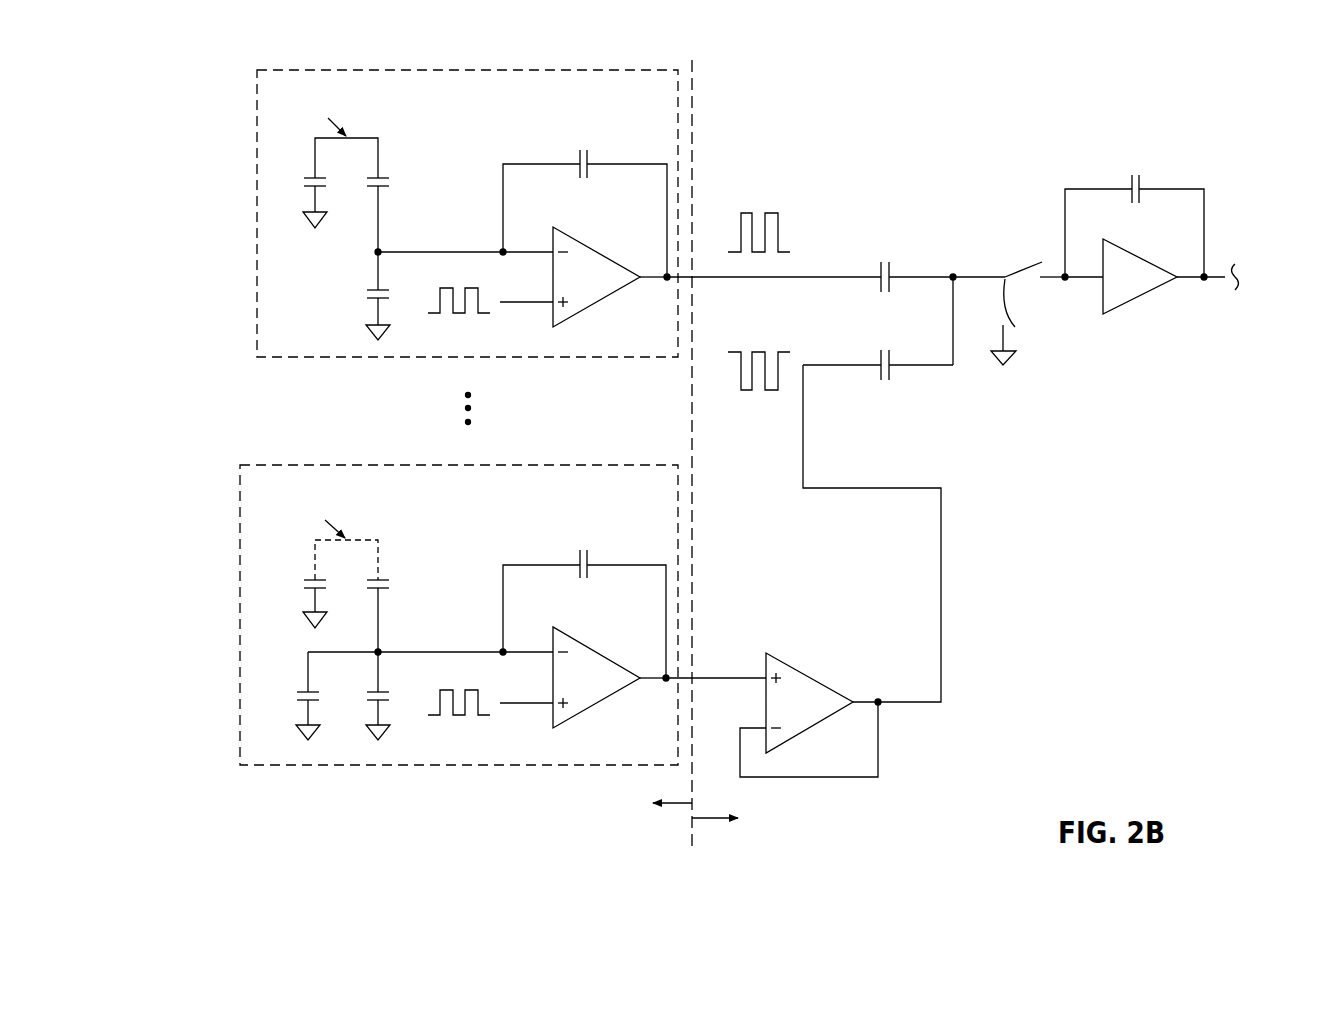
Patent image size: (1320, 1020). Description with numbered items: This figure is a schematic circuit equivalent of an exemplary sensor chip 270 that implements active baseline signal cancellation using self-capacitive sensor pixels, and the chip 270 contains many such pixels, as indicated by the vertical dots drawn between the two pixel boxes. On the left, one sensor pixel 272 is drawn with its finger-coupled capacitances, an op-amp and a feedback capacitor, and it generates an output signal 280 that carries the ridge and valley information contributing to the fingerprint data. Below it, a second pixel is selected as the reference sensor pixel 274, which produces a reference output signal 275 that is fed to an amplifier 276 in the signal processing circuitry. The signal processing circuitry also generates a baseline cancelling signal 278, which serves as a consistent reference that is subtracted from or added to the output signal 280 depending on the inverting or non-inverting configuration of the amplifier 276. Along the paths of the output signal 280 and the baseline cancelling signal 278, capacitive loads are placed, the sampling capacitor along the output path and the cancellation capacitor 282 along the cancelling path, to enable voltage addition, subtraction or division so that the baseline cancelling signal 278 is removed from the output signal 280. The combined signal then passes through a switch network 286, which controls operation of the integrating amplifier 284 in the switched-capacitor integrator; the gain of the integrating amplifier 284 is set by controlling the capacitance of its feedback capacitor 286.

The sensor chip 270 is at (1113, 706).
The sensor pixel 272 is at (256, 113).
The reference sensor pixel 274 is at (240, 480).
The reference output signal 275 is at (710, 676).
The amplifier 276 is at (803, 676).
The baseline cancelling signal 278 is at (763, 352).
The output signal 280 is at (775, 214).
The cancellation capacitor Ccan 282 is at (893, 372).
The integrating amplifier 284 is at (893, 285).
The switch network 286 is at (1002, 272).